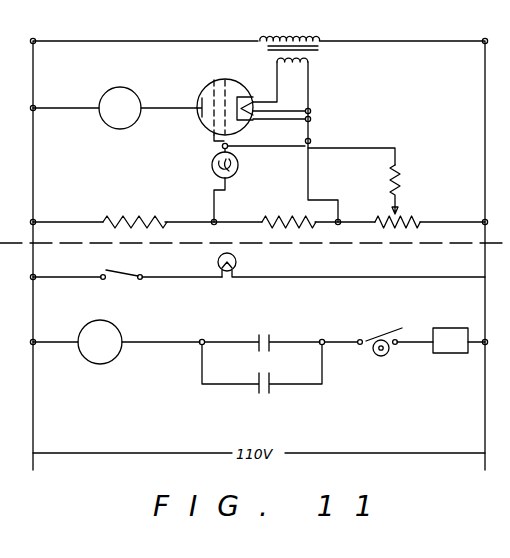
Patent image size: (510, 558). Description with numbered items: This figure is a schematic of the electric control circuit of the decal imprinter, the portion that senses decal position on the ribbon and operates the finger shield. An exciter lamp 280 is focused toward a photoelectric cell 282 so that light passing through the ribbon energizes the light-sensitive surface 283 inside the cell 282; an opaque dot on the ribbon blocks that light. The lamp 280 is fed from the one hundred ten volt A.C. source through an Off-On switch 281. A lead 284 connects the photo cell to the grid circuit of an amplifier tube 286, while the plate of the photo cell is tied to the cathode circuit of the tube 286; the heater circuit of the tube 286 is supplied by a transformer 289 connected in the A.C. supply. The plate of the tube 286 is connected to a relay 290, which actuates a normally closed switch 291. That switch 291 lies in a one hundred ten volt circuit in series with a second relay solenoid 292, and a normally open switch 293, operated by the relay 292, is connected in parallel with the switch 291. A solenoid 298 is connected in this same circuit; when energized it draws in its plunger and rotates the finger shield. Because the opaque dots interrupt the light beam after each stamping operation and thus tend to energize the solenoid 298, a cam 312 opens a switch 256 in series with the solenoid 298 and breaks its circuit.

The transformer 289 is at (298, 33).
The amplifier tube 286 is at (226, 79).
The relay 290 is at (112, 129).
The lead 284 is at (222, 146).
The light-sensitive surface 283 is at (212, 170).
The photoelectric cell 282 is at (215, 177).
The solenoid 298 is at (215, 205).
The Off-On switch 281 is at (120, 268).
The exciter lamp 280 is at (237, 262).
The second relay solenoid 292 is at (115, 362).
The normally closed switch 291 is at (263, 334).
The normally open switch 293 is at (262, 392).
The switch 256 is at (387, 328).
The cam 312 is at (375, 356).